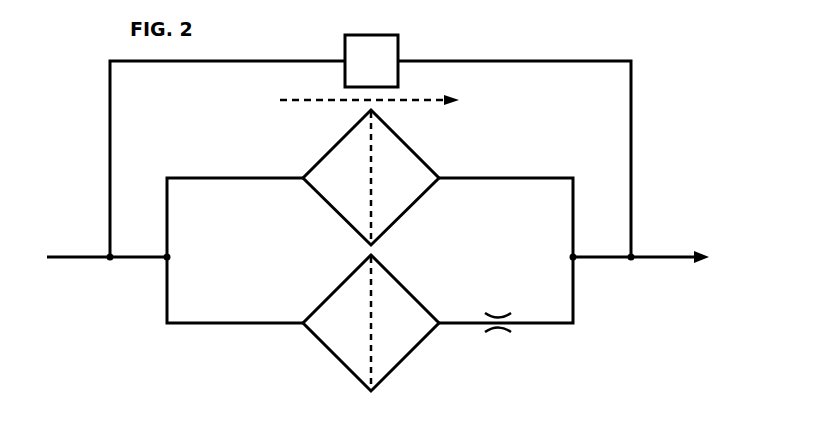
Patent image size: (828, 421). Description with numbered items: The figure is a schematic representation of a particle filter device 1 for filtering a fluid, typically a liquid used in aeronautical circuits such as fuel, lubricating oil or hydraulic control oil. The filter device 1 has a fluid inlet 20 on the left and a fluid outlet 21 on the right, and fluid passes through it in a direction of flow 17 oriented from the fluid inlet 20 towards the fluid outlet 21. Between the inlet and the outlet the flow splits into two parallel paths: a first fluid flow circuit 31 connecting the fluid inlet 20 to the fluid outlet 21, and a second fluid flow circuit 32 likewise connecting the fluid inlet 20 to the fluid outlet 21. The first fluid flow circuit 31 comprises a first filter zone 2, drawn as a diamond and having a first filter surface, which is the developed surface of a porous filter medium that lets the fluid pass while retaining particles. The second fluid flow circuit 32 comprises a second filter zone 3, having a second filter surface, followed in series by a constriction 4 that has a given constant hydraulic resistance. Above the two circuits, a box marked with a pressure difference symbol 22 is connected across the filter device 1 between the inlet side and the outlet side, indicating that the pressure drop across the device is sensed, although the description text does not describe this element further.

The particle filter device 1 is at (58, 104).
The first filter zone 2 is at (409, 210).
The second filter zone 3 is at (409, 355).
The constriction 4 is at (498, 315).
The direction of flow 17 is at (420, 102).
The fluid inlet 20 is at (110, 258).
The fluid outlet 21 is at (662, 256).
The differential pressure sensor 22 is at (398, 48).
The first fluid flow circuit 31 is at (168, 231).
The second fluid flow circuit 32 is at (168, 283).